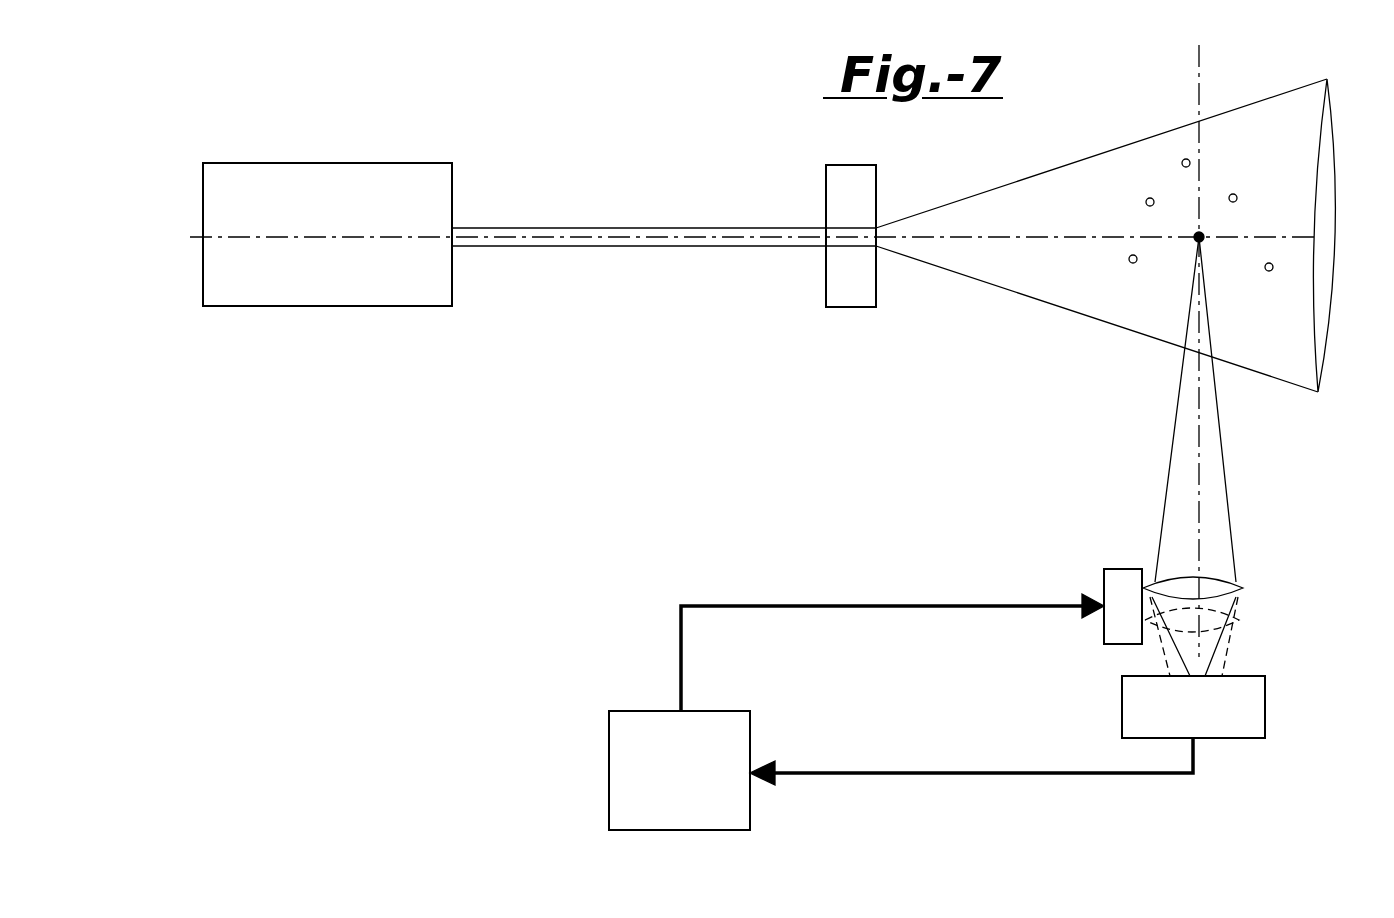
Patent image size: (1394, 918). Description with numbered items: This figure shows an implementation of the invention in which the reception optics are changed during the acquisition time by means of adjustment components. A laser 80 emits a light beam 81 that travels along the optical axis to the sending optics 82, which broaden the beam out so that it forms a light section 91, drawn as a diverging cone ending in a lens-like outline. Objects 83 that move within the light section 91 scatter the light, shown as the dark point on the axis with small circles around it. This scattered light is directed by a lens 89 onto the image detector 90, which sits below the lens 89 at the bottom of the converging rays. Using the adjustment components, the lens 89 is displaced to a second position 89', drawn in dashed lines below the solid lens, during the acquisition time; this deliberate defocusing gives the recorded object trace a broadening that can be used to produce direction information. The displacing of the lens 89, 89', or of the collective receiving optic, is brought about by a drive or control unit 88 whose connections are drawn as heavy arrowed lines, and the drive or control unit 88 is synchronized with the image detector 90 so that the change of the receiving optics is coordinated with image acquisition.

The laser 80 is at (452, 163).
The light beam 81 is at (658, 228).
The sending optics 82 is at (838, 165).
The objects 83 is at (1204, 240).
The drive or control unit 88 is at (638, 711).
The lens 89 is at (1215, 606).
The displaced lens 89' is at (1244, 631).
The image detector 90 is at (1260, 676).
The light section 91 is at (1145, 139).